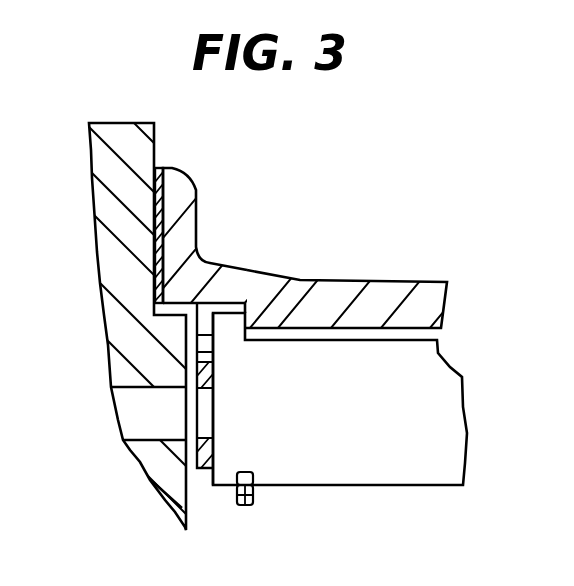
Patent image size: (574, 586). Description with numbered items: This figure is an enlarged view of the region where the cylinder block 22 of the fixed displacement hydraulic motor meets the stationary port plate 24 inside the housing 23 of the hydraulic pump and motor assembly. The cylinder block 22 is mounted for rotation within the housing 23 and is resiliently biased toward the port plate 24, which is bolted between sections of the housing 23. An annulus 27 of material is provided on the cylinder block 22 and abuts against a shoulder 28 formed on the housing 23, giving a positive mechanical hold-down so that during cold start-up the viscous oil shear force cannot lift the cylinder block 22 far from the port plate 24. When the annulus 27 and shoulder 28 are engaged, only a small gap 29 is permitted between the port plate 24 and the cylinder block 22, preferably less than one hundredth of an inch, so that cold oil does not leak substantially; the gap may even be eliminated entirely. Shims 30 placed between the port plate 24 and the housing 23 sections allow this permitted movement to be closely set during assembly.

The cylinder block 22 is at (447, 388).
The housing 23 is at (178, 223).
The port plate 24 is at (100, 188).
The annulus 27 is at (229, 323).
The shoulder 28 is at (301, 279).
The gap 29 is at (193, 379).
The shims 30 is at (153, 257).